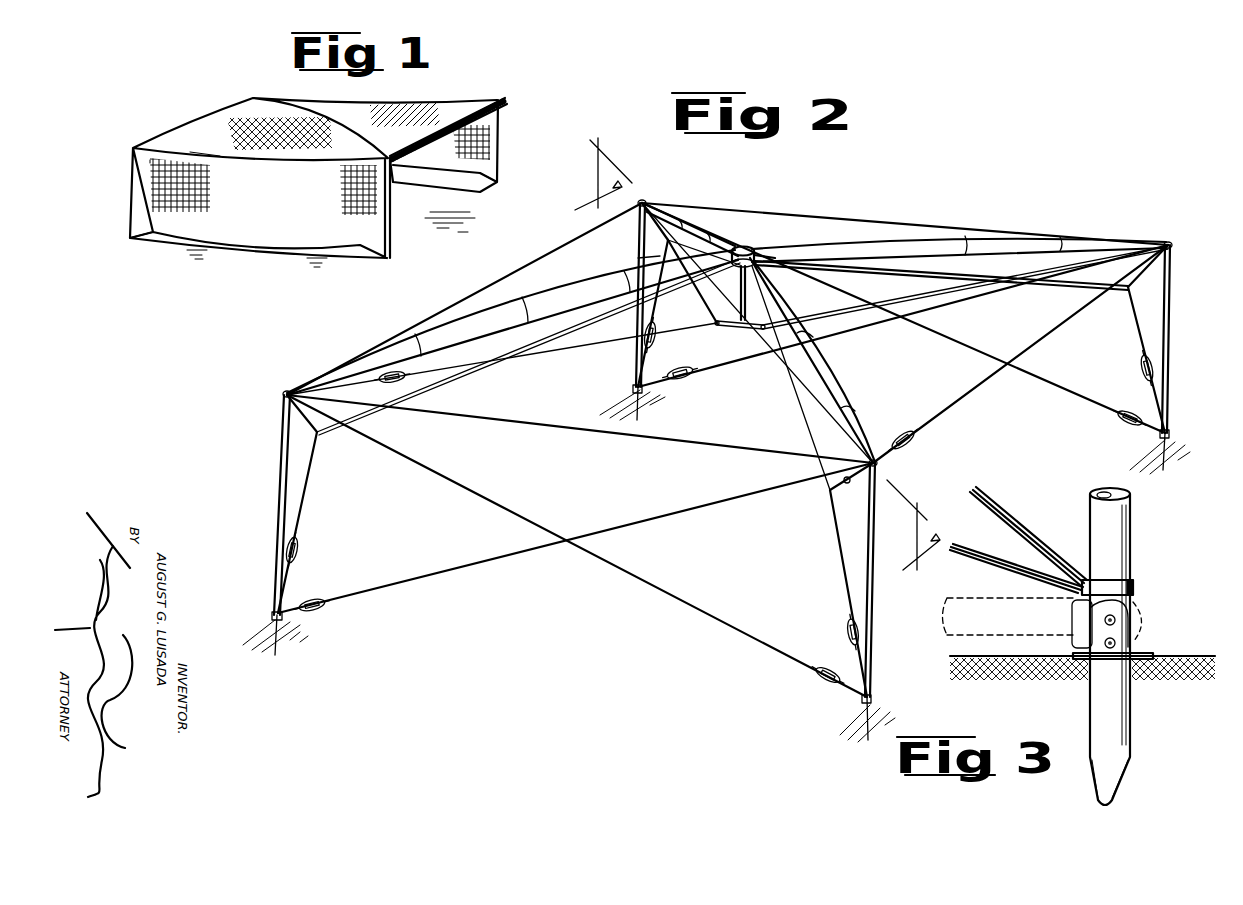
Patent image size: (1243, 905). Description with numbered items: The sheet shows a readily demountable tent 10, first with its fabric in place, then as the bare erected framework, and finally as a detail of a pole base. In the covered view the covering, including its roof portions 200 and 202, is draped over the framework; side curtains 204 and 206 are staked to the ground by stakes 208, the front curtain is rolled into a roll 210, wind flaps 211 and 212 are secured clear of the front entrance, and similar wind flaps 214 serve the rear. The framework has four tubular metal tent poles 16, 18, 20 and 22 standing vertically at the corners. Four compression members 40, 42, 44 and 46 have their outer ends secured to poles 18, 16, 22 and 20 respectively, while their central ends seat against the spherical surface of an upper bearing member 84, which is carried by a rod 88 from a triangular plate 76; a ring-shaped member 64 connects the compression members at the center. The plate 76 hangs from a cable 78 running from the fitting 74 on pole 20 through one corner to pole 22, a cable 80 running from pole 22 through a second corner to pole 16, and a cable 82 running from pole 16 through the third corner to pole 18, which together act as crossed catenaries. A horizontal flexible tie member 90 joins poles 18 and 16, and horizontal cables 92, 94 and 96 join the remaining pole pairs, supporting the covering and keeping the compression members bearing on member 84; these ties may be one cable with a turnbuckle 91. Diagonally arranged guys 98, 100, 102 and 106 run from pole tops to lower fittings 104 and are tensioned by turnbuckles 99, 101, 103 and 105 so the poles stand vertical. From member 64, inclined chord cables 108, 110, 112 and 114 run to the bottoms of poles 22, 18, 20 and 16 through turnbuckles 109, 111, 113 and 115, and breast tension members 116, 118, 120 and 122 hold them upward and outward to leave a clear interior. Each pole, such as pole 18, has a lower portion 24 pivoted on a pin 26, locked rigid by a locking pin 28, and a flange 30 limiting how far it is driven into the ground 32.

In FIG. 2, the tent frame section line 10 is at (756, 357).
In FIG. 2, the tent pole 16 is at (1170, 320).
In FIG. 2, the tent pole 18 is at (873, 552).
In FIG. 3, the tent pole 18 is at (1133, 552).
In FIG. 2, the tent pole 20 is at (286, 478).
In FIG. 2, the tent pole 22 is at (636, 243).
In FIG. 3, the lower portion 24 is at (1132, 745).
In FIG. 3, the pin 26 is at (1116, 620).
In FIG. 3, the locking pin 28 is at (1116, 643).
In FIG. 3, the flange 30 is at (1080, 672).
In FIG. 3, the ground 32 is at (1202, 658).
In FIG. 2, the compression member 40 is at (842, 372).
In FIG. 2, the compression member 42 is at (905, 236).
In FIG. 2, the compression member 44 is at (708, 217).
In FIG. 2, the compression member 46 is at (545, 292).
In FIG. 2, the ring-shaped member 64 is at (745, 250).
In FIG. 2, the fitting 74 is at (282, 396).
In FIG. 2, the triangular plate 76 is at (728, 328).
In FIG. 2, the cable 78 is at (703, 295).
In FIG. 2, the cable 80 is at (733, 282).
In FIG. 2, the cable 82 is at (846, 423).
In FIG. 2, the upper bearing member 84 is at (757, 254).
In FIG. 2, the rod 88 is at (741, 306).
In FIG. 2, the horizontal flexible tie member 90 is at (965, 393).
In FIG. 2, the turnbuckle 91 is at (912, 442).
In FIG. 2, the horizontal cable 92 is at (607, 433).
In FIG. 2, the horizontal cable 94 is at (485, 288).
In FIG. 2, the horizontal cable 96 is at (840, 220).
In FIG. 2, the diagonally arranged guy 98 is at (1062, 388).
In FIG. 2, the turnbuckle 99 is at (1126, 422).
In FIG. 2, the diagonally arranged guy 100 is at (990, 300).
In FIG. 2, the turnbuckle 101 is at (690, 377).
In FIG. 2, the diagonally arranged guy 102 is at (678, 604).
In FIG. 3, the diagonally arranged guy 102 is at (990, 560).
In FIG. 2, the turnbuckle 103 is at (822, 682).
In FIG. 2, the fitting 104 is at (272, 612).
In FIG. 3, the fitting 104 is at (1136, 588).
In FIG. 2, the turnbuckle 105 is at (320, 610).
In FIG. 2, the diagonally arranged guy 106 is at (712, 510).
In FIG. 2, the cable 108 is at (640, 256).
In FIG. 2, the turnbuckle 109 is at (653, 338).
In FIG. 2, the cable 110 is at (803, 410).
In FIG. 3, the cable 110 is at (1015, 518).
In FIG. 2, the turnbuckle 111 is at (846, 630).
In FIG. 2, the cable 112 is at (580, 320).
In FIG. 2, the turnbuckle 113 is at (300, 550).
In FIG. 2, the cable 114 is at (942, 271).
In FIG. 2, the turnbuckle 115 is at (1140, 368).
In FIG. 2, the breast tension member 116 is at (652, 230).
In FIG. 2, the breast tension member 118 is at (850, 485).
In FIG. 2, the breast tension member 120 is at (290, 417).
In FIG. 2, the breast tension member 122 is at (1172, 272).
In FIG. 1, the roof vent panel 200 is at (252, 98).
In FIG. 1, the tent canopy 202 is at (185, 135).
In FIG. 1, the side curtain 204 is at (145, 178).
In FIG. 1, the side curtain 206 is at (495, 132).
In FIG. 1, the stakes 208 is at (292, 254).
In FIG. 1, the roll 210 is at (505, 100).
In FIG. 1, the wind flap 211 is at (378, 228).
In FIG. 1, the wind flap 212 is at (498, 157).
In FIG. 1, the wind flaps 214 is at (130, 246).